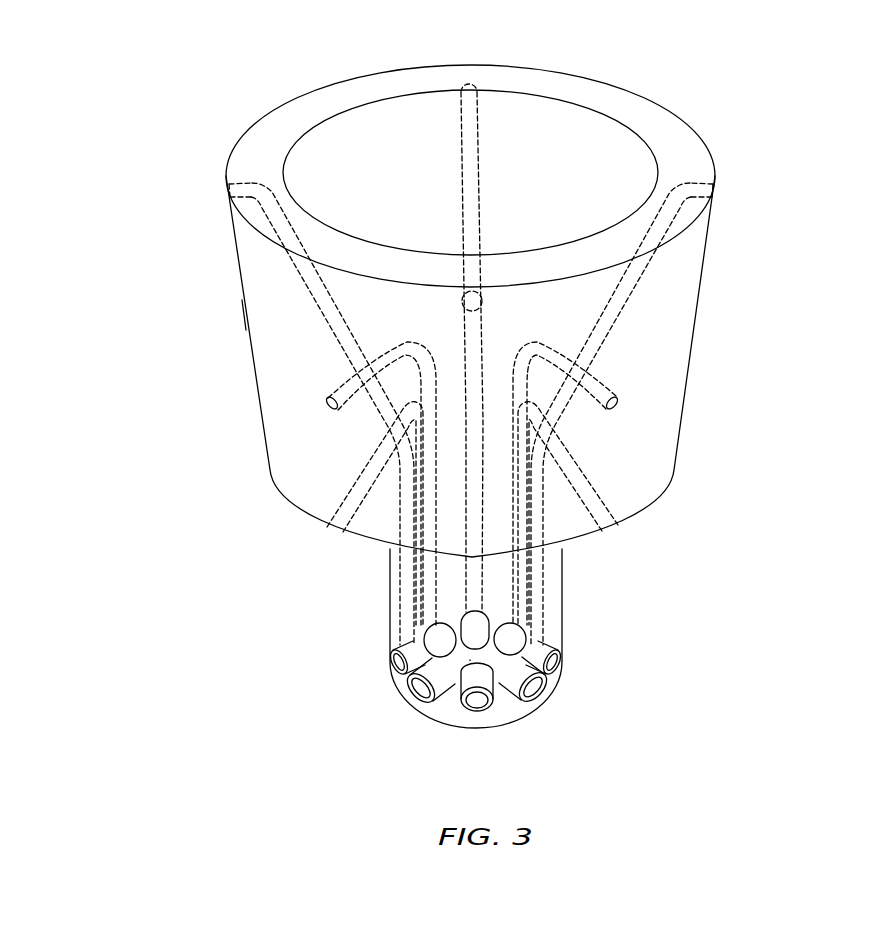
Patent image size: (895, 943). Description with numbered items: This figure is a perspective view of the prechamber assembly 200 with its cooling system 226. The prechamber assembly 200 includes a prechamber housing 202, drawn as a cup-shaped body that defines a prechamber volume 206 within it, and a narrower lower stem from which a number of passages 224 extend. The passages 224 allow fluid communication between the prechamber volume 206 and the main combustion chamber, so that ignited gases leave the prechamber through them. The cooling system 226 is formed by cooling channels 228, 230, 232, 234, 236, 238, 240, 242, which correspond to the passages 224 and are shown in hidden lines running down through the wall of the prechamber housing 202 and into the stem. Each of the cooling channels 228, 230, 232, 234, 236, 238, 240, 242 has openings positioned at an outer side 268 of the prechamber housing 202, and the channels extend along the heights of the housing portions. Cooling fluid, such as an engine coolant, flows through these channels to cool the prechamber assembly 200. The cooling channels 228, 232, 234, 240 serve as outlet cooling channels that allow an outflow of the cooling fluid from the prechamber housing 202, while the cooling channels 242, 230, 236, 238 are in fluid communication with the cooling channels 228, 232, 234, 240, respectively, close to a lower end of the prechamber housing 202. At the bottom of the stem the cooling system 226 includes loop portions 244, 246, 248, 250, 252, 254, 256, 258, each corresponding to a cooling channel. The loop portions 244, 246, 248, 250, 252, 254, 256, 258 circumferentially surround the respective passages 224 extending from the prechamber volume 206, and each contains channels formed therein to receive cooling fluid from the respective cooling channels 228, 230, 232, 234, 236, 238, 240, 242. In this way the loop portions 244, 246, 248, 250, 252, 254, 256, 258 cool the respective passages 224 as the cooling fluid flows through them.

The prechamber assembly 200 is at (797, 100).
The prechamber housing 202 is at (732, 222).
The prechamber volume 206 is at (519, 183).
The passages 224 is at (399, 677).
The cooling system 226 is at (216, 202).
The cooling channel 228 is at (690, 184).
The cooling channel 230 is at (615, 381).
The cooling channel 232 is at (470, 117).
The cooling channel 234 is at (266, 203).
The cooling channel 236 is at (327, 399).
The cooling channel 238 is at (352, 492).
The cooling channel 240 is at (475, 572).
The cooling channel 242 is at (613, 517).
The loop portion 244 is at (548, 645).
The loop portion 246 is at (518, 625).
The loop portion 248 is at (466, 613).
The loop portion 250 is at (413, 628).
The loop portion 252 is at (393, 654).
The loop portion 254 is at (433, 704).
The loop portion 256 is at (461, 705).
The loop portion 258 is at (511, 703).
The outer side 268 is at (267, 277).